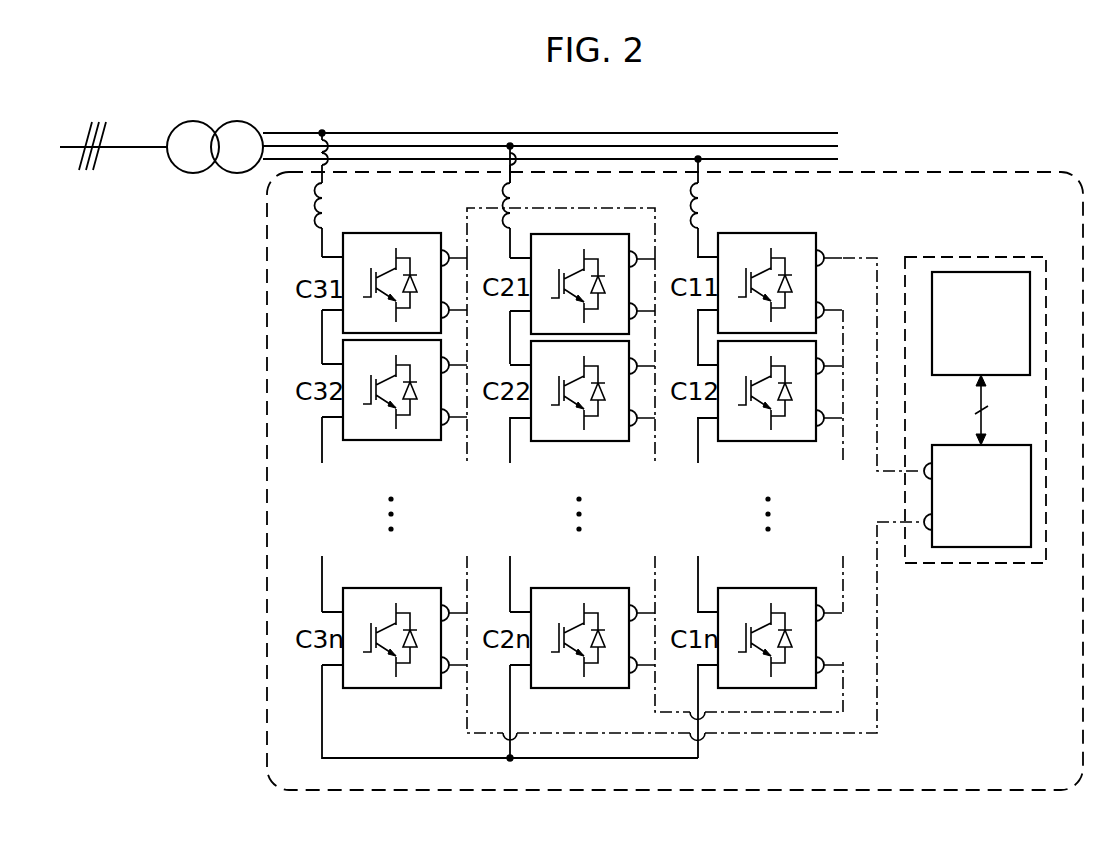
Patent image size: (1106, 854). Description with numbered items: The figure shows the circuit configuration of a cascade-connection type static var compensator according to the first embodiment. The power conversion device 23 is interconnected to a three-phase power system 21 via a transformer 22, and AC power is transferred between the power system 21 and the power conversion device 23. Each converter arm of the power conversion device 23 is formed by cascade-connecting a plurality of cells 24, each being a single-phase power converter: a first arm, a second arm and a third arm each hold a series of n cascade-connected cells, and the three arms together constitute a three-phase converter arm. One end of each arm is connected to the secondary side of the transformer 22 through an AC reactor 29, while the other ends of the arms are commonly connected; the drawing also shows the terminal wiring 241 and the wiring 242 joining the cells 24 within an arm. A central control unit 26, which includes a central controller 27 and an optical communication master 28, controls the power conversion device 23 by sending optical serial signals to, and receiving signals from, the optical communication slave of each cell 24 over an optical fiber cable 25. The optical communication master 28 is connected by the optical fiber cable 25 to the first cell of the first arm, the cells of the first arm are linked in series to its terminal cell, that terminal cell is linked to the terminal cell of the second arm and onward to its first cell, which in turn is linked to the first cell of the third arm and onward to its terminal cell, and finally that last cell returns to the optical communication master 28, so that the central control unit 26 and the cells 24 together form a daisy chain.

The three-phase power system 21 is at (103, 126).
The transformer 22 is at (193, 121).
The power conversion device 23 is at (267, 428).
The cell 24 is at (343, 270).
The first terminal wiring 241 is at (322, 243).
The second terminal wiring 242 is at (322, 338).
The optical fiber cable 25 is at (868, 257).
The central control unit 26 is at (958, 257).
The central controller 27 is at (1002, 272).
The optical communication master 28 is at (998, 549).
The AC reactor 29 is at (326, 204).